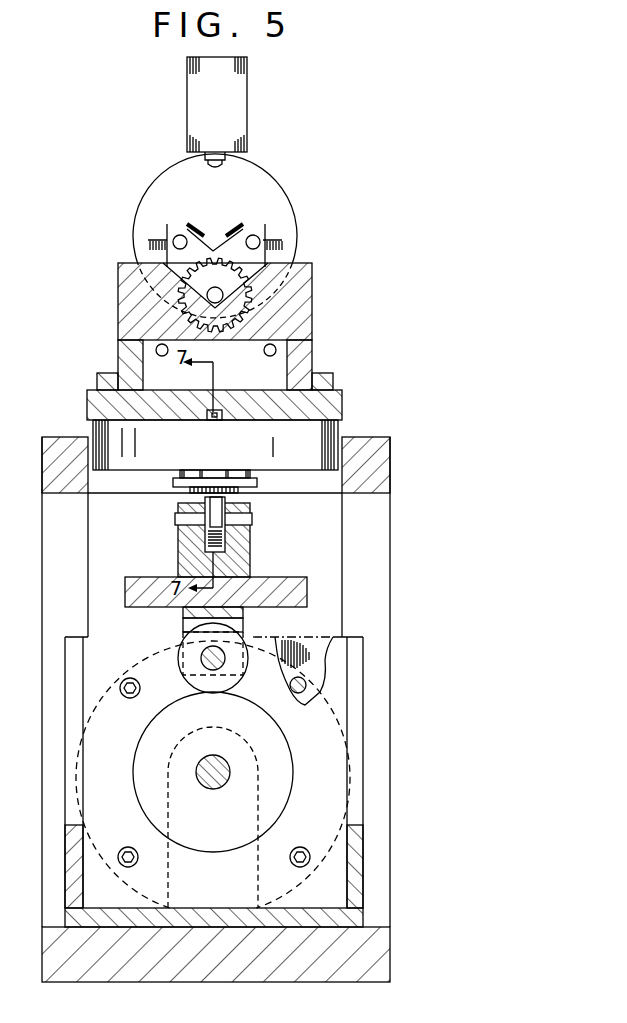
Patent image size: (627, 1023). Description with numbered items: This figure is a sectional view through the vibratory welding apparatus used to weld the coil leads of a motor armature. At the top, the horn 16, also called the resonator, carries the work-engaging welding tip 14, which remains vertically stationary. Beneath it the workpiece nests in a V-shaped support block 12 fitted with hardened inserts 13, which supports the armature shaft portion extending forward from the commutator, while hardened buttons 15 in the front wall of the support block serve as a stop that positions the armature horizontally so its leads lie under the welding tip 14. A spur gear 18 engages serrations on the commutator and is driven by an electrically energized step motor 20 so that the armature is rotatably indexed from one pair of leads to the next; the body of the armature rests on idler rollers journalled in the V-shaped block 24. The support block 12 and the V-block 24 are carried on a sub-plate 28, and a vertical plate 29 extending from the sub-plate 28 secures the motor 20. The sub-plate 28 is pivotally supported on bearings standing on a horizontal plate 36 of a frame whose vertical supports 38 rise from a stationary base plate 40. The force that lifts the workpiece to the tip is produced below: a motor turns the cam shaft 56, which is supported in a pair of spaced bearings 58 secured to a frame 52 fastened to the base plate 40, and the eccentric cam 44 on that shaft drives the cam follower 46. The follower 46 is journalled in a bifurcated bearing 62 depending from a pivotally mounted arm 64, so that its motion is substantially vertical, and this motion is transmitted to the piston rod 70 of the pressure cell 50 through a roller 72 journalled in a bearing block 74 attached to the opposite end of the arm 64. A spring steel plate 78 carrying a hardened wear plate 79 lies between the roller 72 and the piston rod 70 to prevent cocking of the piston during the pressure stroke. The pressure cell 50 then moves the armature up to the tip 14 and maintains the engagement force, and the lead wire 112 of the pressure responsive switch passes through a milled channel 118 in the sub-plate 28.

The V-shaped support block 12 is at (212, 248).
The hardened inserts 13 is at (233, 224).
The welding tip 14 is at (218, 166).
The hardened buttons 15 is at (255, 236).
The horn 16 is at (204, 108).
The spur gear 18 is at (206, 286).
The step motor 20 is at (273, 235).
The V-shaped block 24 is at (303, 303).
The sub-plate 28 is at (335, 402).
The vertical plate 29 is at (283, 255).
The horizontal plate 36 is at (62, 440).
The vertical supports 38 is at (52, 523).
The stationary base plate 40 is at (247, 973).
The eccentric cam 44 is at (152, 737).
The cam follower 46 is at (198, 643).
The pressure cell 50 is at (333, 432).
The frame 52 is at (73, 917).
The cam shaft 56 is at (210, 786).
The bearings 58 is at (208, 880).
The bifurcated bearing 62 is at (243, 613).
The pivotally mounted arm 64 is at (143, 578).
The piston rod 70 is at (213, 471).
The roller 72 is at (221, 528).
The bearing block 74 is at (247, 552).
The spring steel plate 78 is at (173, 483).
The hardened wear plate 79 is at (200, 492).
The lead wire 112 is at (220, 420).
The milled channel 118 is at (207, 417).